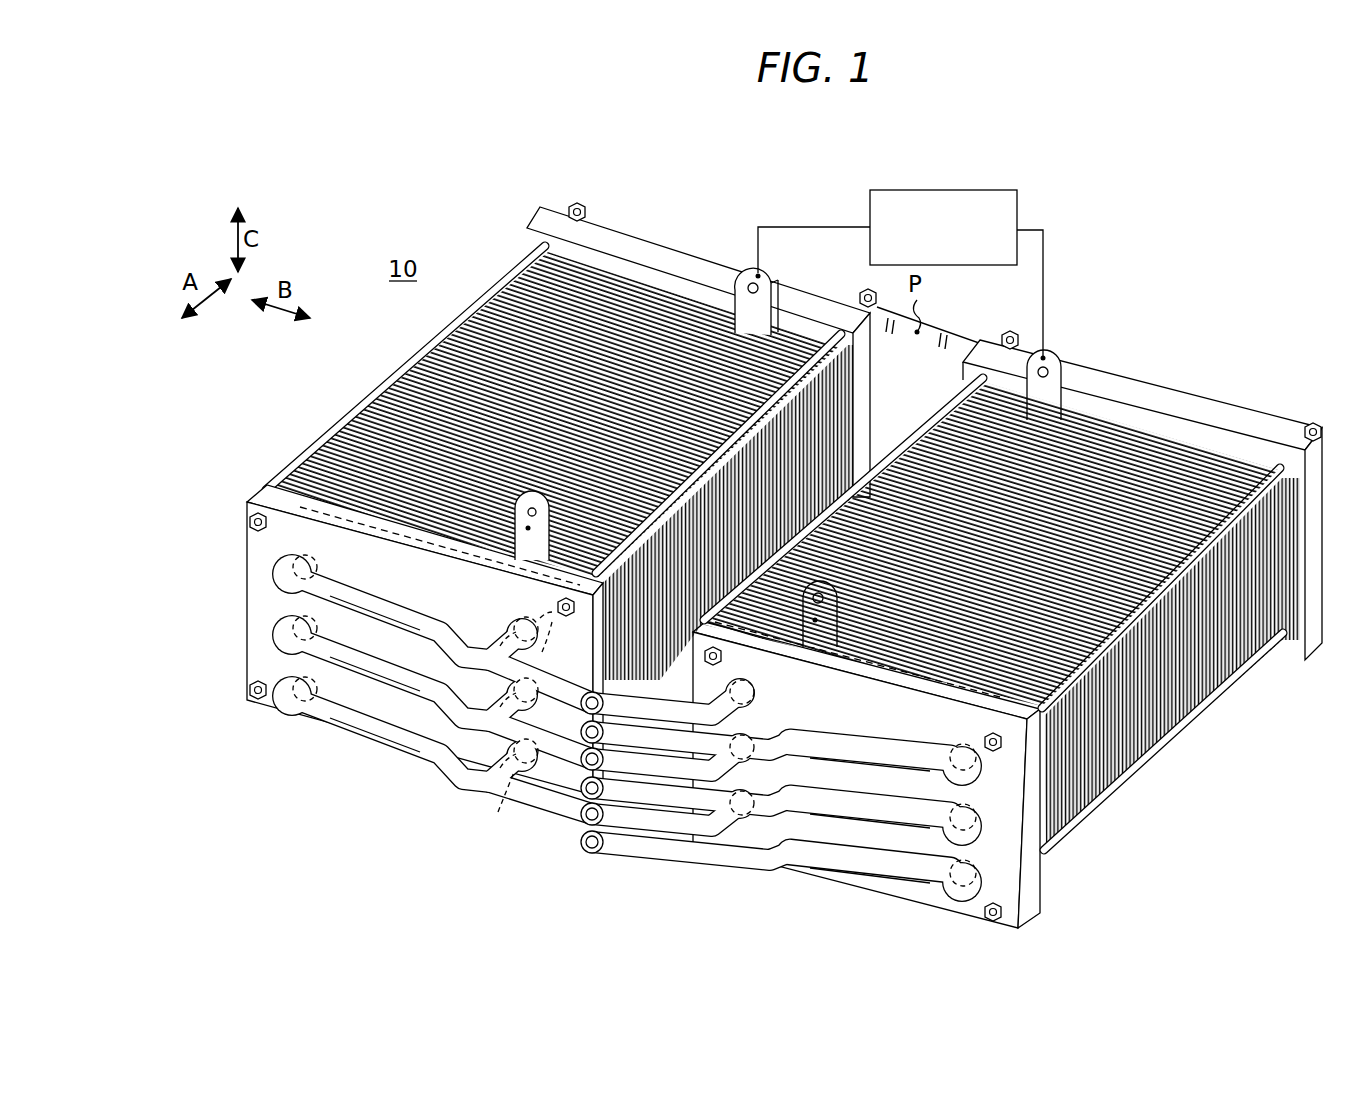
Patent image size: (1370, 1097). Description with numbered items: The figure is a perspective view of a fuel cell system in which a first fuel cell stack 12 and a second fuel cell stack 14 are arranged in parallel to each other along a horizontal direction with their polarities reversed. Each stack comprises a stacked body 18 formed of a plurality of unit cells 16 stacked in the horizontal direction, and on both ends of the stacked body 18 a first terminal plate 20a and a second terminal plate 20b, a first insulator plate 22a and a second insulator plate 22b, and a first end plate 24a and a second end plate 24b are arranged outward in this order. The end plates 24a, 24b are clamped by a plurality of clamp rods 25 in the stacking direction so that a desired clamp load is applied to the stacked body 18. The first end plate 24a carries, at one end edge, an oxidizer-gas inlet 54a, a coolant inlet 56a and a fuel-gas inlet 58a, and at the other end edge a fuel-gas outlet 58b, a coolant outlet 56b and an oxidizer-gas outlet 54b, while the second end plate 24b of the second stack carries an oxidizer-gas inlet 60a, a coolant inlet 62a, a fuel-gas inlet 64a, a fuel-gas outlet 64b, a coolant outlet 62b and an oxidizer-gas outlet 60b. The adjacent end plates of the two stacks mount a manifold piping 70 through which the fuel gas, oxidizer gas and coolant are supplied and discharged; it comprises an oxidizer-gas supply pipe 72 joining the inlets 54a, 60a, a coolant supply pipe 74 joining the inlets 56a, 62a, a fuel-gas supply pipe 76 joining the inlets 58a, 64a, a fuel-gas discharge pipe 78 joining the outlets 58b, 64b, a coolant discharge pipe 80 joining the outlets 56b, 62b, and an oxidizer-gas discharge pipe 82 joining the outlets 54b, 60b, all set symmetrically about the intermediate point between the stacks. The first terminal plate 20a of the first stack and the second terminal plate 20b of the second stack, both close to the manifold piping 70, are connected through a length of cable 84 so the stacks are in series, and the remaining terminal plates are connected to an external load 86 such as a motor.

The first fuel cell stack 12 is at (1195, 388).
The second fuel cell stack 14 is at (667, 232).
The unit cells 16 is at (400, 424).
The stacked body 18 is at (325, 380).
The first terminal plate 20a is at (740, 278).
The second terminal plate 20b is at (528, 528).
The first insulator plate 22a is at (784, 327).
The second insulator plate 22b is at (312, 496).
The first end plate 24a is at (830, 302).
The second end plate 24b is at (274, 496).
The clamp rods 25 is at (336, 452).
The oxidizer-gas inlet 54a is at (757, 692).
The oxidizer-gas outlet 54b is at (954, 902).
The coolant inlet 56a is at (776, 726).
The coolant outlet 56b is at (968, 828).
The fuel-gas inlet 58a is at (746, 856).
The fuel-gas outlet 58b is at (968, 772).
The oxidizer-gas inlet 60a is at (518, 618).
The oxidizer-gas outlet 60b is at (286, 704).
The coolant inlet 62a is at (540, 636).
The coolant outlet 62b is at (342, 630).
The fuel-gas inlet 64a is at (507, 789).
The fuel-gas outlet 64b is at (322, 570).
The manifold piping 70 is at (428, 792).
The oxidizer-gas supply pipe 72 is at (498, 636).
The coolant supply pipe 74 is at (498, 691).
The fuel-gas supply pipe 76 is at (498, 746).
The fuel-gas discharge pipe 78 is at (272, 570).
The coolant discharge pipe 80 is at (272, 626).
The oxidizer-gas discharge pipe 82 is at (272, 672).
The cable 84 is at (540, 620).
The external load 86 is at (956, 189).